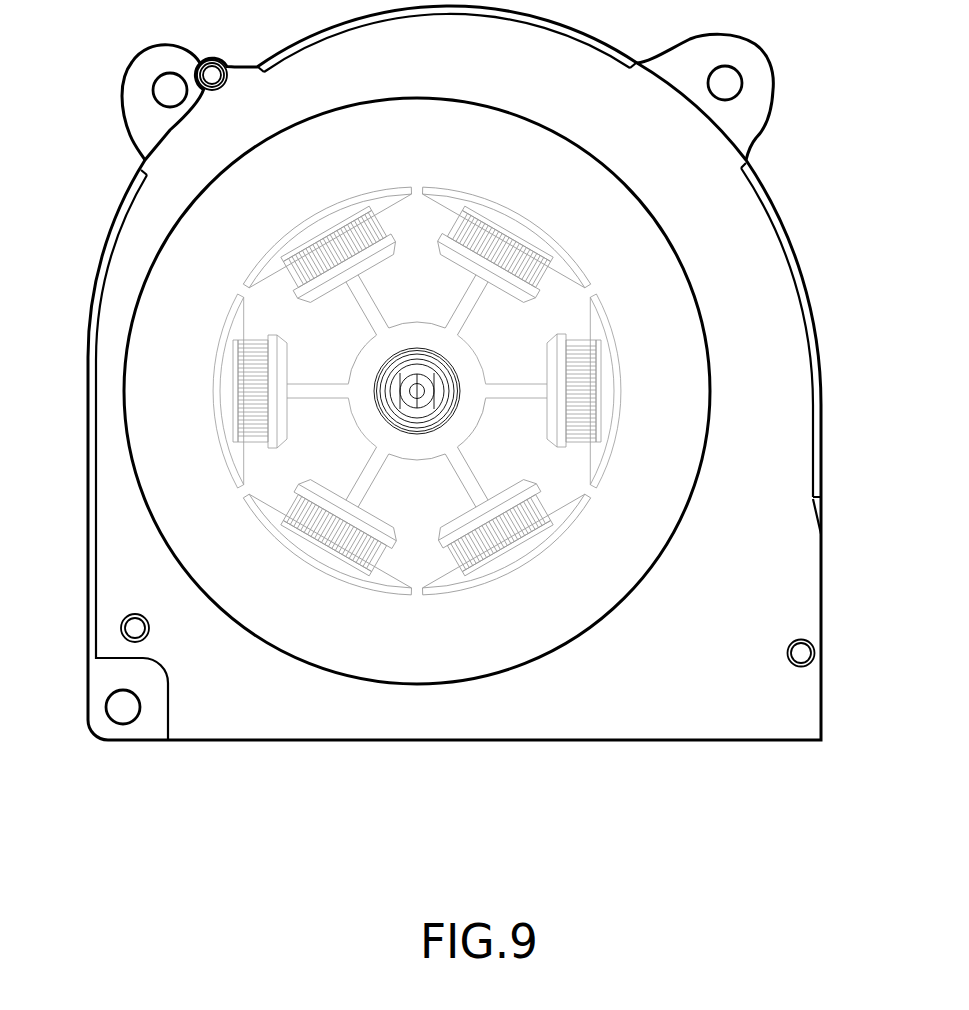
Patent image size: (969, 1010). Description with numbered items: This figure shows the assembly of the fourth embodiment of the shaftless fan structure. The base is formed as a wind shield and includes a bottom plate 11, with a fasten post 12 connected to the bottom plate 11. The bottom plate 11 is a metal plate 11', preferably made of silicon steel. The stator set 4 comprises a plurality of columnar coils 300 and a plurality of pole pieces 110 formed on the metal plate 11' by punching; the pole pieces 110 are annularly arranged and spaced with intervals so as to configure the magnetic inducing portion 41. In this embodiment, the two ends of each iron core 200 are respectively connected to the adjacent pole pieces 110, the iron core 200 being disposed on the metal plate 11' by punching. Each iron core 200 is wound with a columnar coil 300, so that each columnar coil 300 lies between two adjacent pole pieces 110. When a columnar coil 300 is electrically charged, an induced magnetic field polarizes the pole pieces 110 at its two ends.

The bottom plate 11 is at (454, 442).
The metal plate 11' is at (458, 425).
The fasten post 12 is at (405, 378).
The stator set 4 is at (504, 391).
The magnetic inducing portion 41 is at (530, 321).
The pole pieces 110 is at (505, 440).
The iron core 200 is at (587, 332).
The columnar coil 300 is at (587, 393).